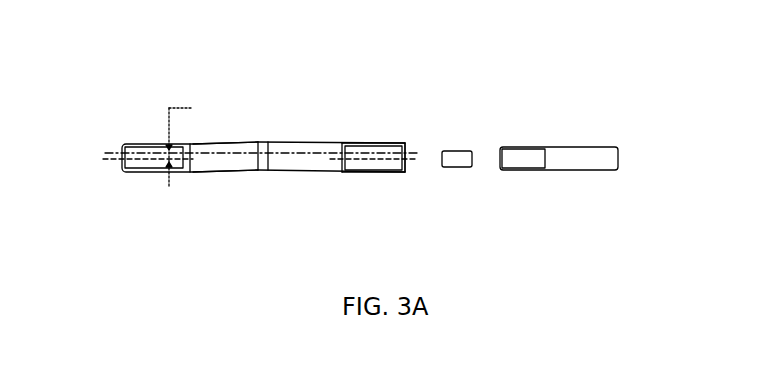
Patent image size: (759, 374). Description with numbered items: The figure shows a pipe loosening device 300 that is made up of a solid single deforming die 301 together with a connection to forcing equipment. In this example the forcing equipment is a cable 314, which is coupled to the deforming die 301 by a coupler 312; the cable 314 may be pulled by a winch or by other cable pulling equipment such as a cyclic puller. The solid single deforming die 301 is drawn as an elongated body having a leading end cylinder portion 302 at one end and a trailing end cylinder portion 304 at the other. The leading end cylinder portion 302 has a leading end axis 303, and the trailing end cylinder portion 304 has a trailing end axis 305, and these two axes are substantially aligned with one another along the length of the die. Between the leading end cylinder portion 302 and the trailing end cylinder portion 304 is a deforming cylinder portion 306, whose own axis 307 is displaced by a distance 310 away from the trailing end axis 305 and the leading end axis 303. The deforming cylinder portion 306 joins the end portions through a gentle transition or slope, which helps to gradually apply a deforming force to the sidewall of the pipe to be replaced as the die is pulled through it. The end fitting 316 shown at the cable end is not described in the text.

The pipe loosening device 300 is at (592, 252).
The solid single deforming die 301 is at (249, 198).
The leading end cylinder portion 302 is at (383, 146).
The leading end axis 303 is at (402, 147).
The trailing end cylinder portion 304 is at (145, 145).
The trailing end axis 305 is at (112, 153).
The deforming cylinder portion 306 is at (267, 142).
The axis 307 is at (245, 142).
The distance 310 is at (206, 143).
The coupler 312 is at (462, 168).
The cable 314 is at (590, 155).
The connector insert 316 is at (525, 153).